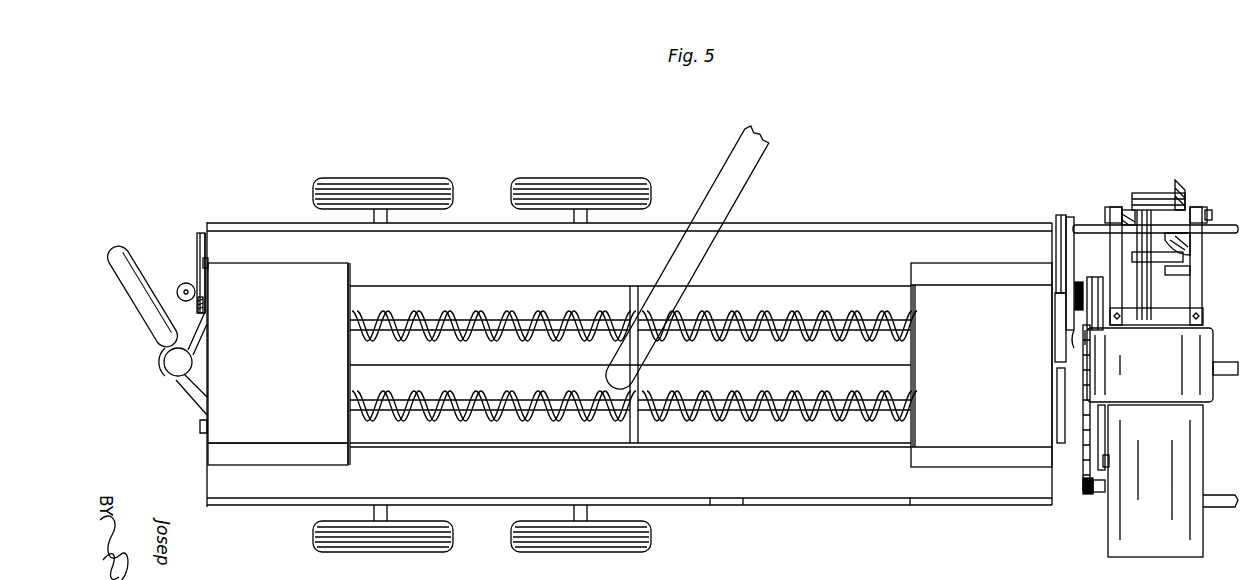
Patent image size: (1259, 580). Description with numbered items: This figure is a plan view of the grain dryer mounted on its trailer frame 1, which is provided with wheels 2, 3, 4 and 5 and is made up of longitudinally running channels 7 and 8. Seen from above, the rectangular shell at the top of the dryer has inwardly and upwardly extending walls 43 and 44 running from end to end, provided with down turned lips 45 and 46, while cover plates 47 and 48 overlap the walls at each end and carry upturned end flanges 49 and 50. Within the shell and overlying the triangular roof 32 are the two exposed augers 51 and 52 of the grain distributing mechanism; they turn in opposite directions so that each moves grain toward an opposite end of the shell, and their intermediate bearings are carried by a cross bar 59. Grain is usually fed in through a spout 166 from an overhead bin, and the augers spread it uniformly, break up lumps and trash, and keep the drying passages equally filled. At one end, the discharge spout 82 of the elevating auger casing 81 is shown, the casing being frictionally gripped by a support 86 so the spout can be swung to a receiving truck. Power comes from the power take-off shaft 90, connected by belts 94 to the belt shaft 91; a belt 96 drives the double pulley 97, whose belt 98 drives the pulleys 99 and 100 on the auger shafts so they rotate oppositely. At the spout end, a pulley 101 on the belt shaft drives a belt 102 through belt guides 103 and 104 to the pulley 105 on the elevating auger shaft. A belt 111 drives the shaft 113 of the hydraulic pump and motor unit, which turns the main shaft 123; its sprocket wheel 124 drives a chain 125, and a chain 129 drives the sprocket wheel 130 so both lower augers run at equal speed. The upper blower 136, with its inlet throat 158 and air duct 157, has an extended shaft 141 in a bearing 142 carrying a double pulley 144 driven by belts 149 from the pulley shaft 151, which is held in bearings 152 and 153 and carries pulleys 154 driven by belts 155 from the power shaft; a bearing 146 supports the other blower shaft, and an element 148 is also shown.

The trailer frame 1 is at (902, 513).
The wheel 2 is at (430, 552).
The wheel 3 is at (628, 552).
The wheel 4 is at (420, 178).
The wheel 5 is at (614, 178).
The channel 7 is at (744, 506).
The channel 8 is at (860, 226).
The triangular roof 32 is at (777, 366).
The wall 43 is at (630, 252).
The wall 44 is at (630, 422).
The down turned lip 45 is at (536, 287).
The down turned lip 46 is at (524, 444).
The cover plate 47 is at (279, 364).
The cover plate 48 is at (981, 365).
The upturned end flange 49 is at (348, 376).
The upturned end flange 50 is at (916, 345).
The auger 51 is at (430, 345).
The auger 52 is at (428, 392).
The cross bar 59 is at (634, 446).
The casing 81 is at (166, 358).
The discharge spout 82 is at (106, 246).
The support 86 is at (170, 380).
The power take-off shaft 90 is at (1220, 370).
The belt shaft 91 is at (208, 262).
The belt 94 is at (1097, 280).
The belt 96 is at (1070, 217).
The pulley 97 is at (1057, 220).
The belt 98 is at (1060, 247).
The pulley 99 is at (1057, 435).
The pulley 100 is at (1055, 314).
The pulley 101 is at (196, 234).
The belt 102 is at (197, 243).
The belt guide 103 is at (204, 306).
The belt guide 104 is at (186, 283).
The pulley 105 is at (160, 370).
The belt 111 is at (1105, 430).
The shaft 113 is at (1108, 460).
The main shaft 123 is at (1099, 492).
The sprocket wheel 124 is at (1082, 495).
The chain 125 is at (1083, 450).
The chain 129 is at (1078, 345).
The sprocket wheel 130 is at (1079, 282).
The blower 136 is at (1150, 365).
The extended shaft 141 is at (1160, 306).
The bearing 142 is at (1192, 244).
The double pulley 144 is at (1140, 193).
The bearing 146 is at (1191, 274).
The cross bar 148 is at (1184, 259).
The belt 149 is at (1178, 182).
The pulley shaft 151 is at (1212, 215).
The bearing 152 is at (1110, 207).
The bearing 153 is at (1200, 207).
The pulley 154 is at (1130, 210).
The belt 155 is at (1152, 290).
The air duct 157 is at (1080, 355).
The inlet throat 158 is at (1173, 481).
The spout 166 is at (728, 172).